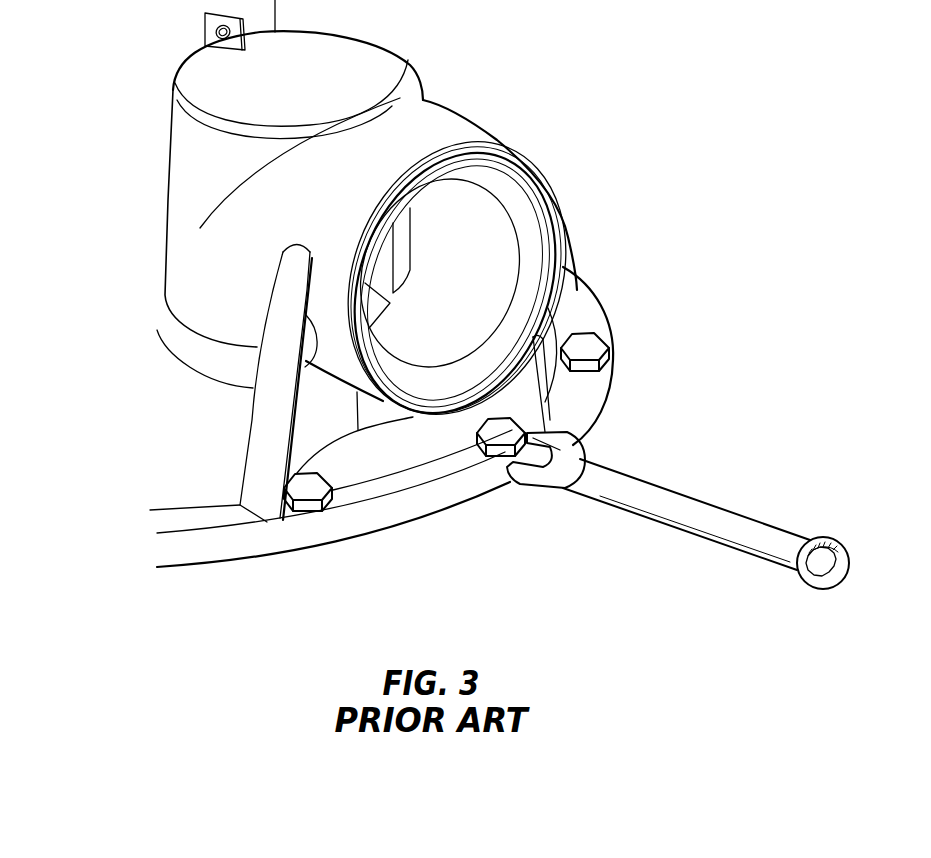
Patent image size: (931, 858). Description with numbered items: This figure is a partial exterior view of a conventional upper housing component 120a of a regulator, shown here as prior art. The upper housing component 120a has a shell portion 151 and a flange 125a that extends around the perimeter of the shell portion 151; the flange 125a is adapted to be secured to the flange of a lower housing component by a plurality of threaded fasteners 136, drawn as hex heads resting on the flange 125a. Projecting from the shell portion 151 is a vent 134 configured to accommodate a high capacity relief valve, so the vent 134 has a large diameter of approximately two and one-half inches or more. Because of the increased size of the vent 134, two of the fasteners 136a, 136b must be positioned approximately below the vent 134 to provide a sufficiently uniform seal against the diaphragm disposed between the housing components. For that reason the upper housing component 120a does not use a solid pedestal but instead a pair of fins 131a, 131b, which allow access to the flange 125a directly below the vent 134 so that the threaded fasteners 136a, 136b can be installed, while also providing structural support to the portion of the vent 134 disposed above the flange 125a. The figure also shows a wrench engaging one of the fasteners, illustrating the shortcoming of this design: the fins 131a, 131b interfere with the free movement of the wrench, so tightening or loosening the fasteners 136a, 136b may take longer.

The upper housing component 120a is at (151, 380).
The shell portion 151 is at (143, 429).
The fin 131a is at (262, 450).
The fin 131b is at (543, 387).
The vent 134 is at (528, 190).
The flange 125a is at (403, 517).
The threaded fasteners 136 is at (608, 357).
The threaded fastener 136a is at (310, 512).
The threaded fastener 136b is at (493, 457).